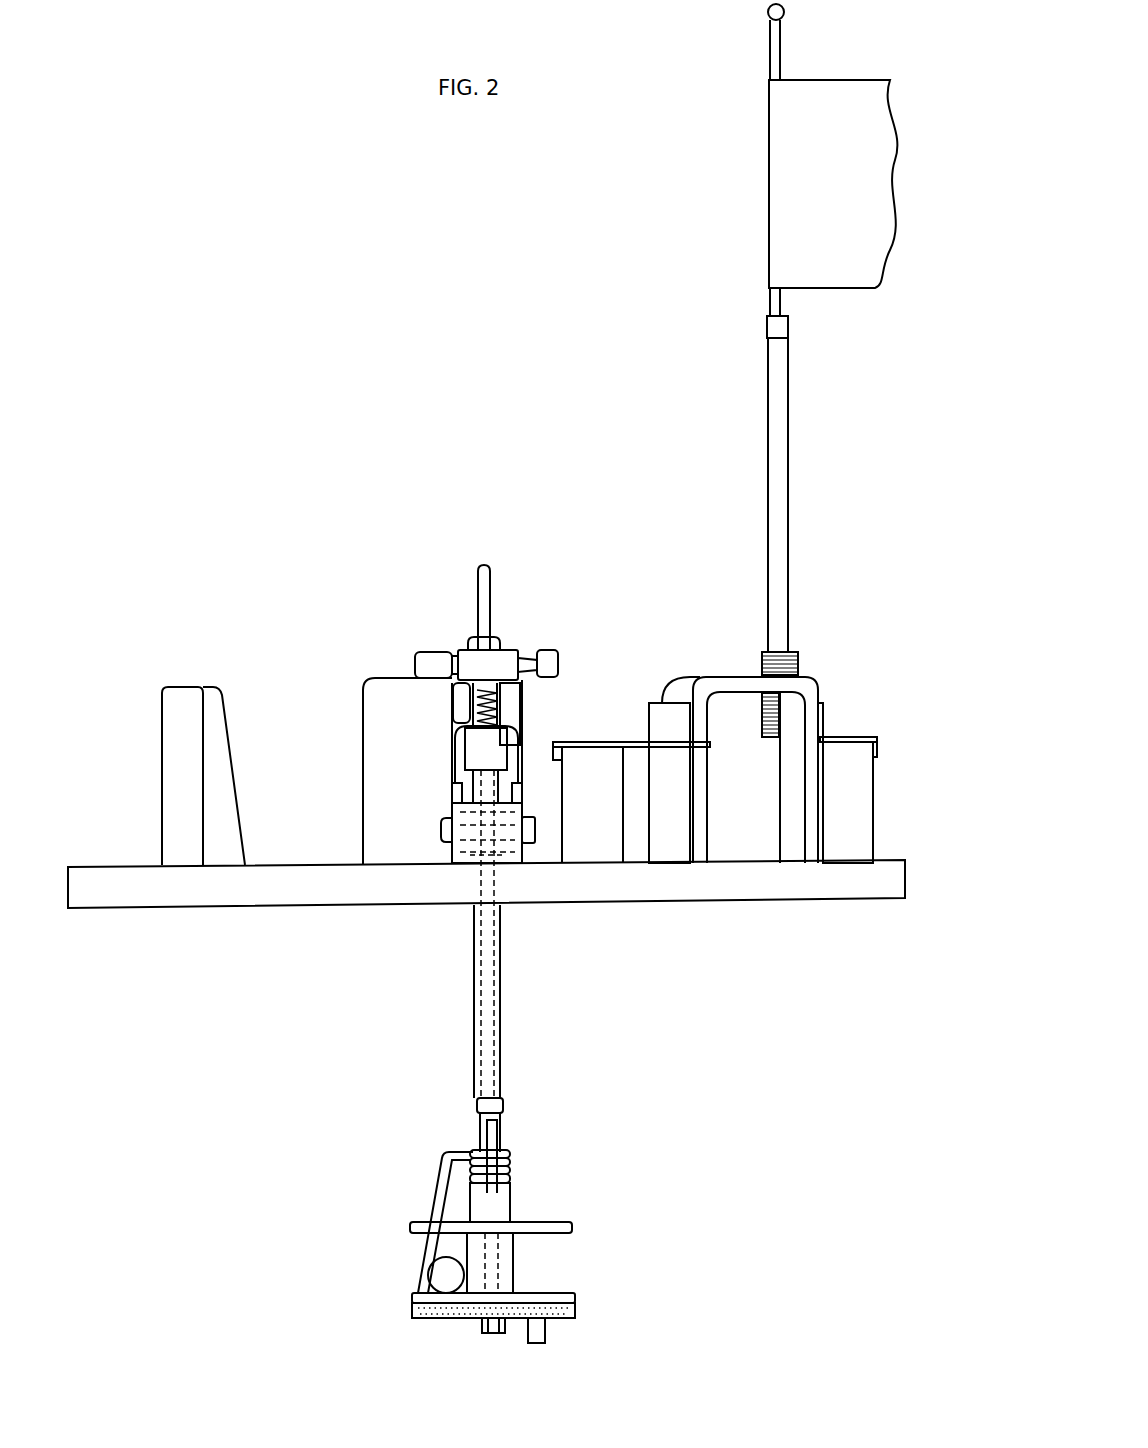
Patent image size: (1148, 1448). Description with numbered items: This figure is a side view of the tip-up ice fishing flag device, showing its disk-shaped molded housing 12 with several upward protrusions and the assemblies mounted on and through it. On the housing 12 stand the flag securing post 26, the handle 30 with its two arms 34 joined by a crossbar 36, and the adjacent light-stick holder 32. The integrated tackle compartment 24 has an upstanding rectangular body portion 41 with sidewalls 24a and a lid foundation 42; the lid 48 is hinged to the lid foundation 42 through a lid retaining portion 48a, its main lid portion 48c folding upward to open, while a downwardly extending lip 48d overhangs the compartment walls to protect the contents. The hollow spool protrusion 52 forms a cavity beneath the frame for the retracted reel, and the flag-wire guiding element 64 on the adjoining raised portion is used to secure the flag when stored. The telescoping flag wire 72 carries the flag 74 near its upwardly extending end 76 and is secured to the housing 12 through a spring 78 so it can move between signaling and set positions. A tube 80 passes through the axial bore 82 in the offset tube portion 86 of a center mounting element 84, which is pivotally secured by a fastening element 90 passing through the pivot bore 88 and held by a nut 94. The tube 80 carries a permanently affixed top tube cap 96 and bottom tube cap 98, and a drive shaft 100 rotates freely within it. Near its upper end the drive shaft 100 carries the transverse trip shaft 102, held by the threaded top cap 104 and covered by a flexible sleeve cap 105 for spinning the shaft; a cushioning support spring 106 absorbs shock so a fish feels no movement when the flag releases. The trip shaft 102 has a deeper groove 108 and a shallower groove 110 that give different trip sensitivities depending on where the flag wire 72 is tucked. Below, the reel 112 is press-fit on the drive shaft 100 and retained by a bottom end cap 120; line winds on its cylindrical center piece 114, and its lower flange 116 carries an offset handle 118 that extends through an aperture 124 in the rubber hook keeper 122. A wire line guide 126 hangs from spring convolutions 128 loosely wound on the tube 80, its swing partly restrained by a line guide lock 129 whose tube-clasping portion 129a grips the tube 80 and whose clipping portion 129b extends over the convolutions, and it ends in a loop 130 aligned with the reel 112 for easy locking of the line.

The housing 12 is at (850, 887).
The integrated tackle compartment 24 is at (888, 838).
The sidewalls 24a is at (873, 803).
The flag securing post 26 is at (182, 690).
The handle 30 is at (684, 666).
The light-stick holder 32 is at (677, 855).
The arms 34 is at (790, 855).
The crossbar 36 is at (735, 677).
The body portion 41 is at (592, 855).
The lid foundation 42 is at (635, 855).
The lid 48 is at (838, 732).
The lid retaining portion 48a is at (740, 742).
The main lid portion 48c is at (590, 742).
The downwardly extending lip 48d is at (880, 745).
The hollow spool protrusion 52 is at (393, 673).
The flag-wire guiding element 64 is at (460, 710).
The flag wire 72 is at (774, 372).
The flag 74 is at (779, 180).
The upwardly extending end 76 is at (768, 12).
The spring 78 is at (800, 660).
The tube 80 is at (500, 1010).
The axial bore 82 is at (478, 868).
The center mounting element 84 is at (445, 860).
The offset tube portion 86 is at (455, 800).
The pivot bore 88 is at (453, 832).
The fastening element 90 is at (446, 828).
The nut 94 is at (532, 835).
The top tube cap 96 is at (472, 750).
The bottom tube cap 98 is at (475, 1208).
The drive shaft 100 is at (460, 985).
The trip shaft 102 is at (470, 665).
The top cap 104 is at (472, 633).
The flexible sleeve cap 105 is at (485, 563).
The cushioning support spring 106 is at (478, 712).
The deeper groove 108 is at (530, 665).
The shallower groove 110 is at (460, 690).
The reel 112 is at (572, 1243).
The cylindrical center piece 114 is at (515, 1272).
The lower flange 116 is at (575, 1295).
The offset handle 118 is at (545, 1340).
The bottom end cap 120 is at (482, 1322).
The hook keeper 122 is at (412, 1308).
The aperture 124 is at (550, 1318).
The line guide 126 is at (437, 1170).
The spring convolutions 128 is at (512, 1160).
The line guide lock 129 is at (477, 1103).
The tube-clasping portion 129a is at (505, 1105).
The line-guide clipping portion 129b is at (498, 1130).
The loop 130 is at (445, 1258).